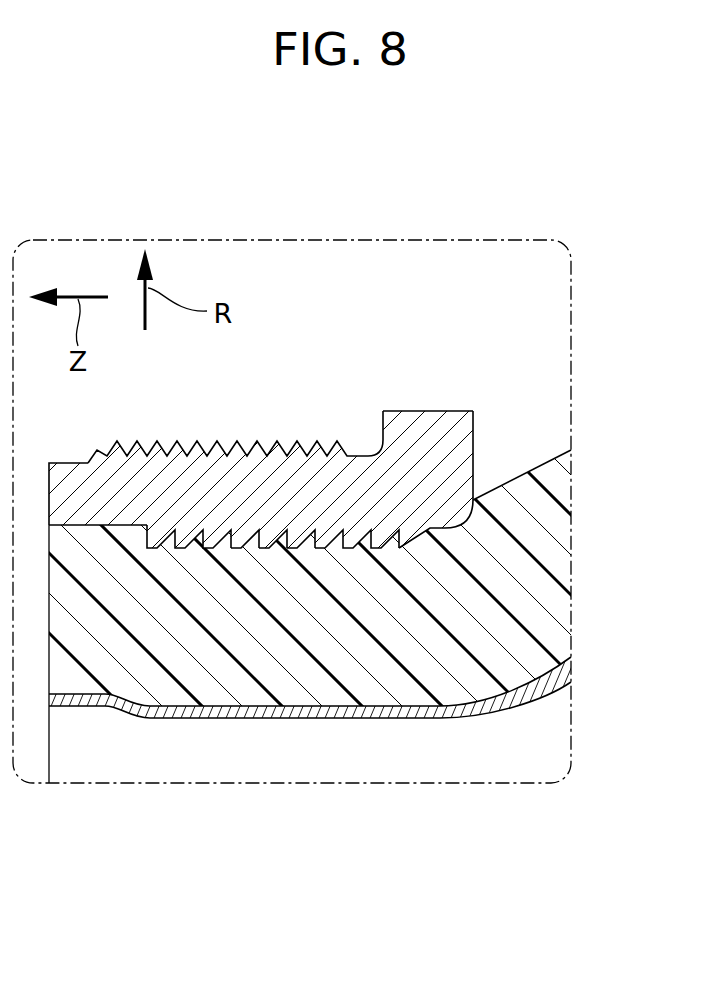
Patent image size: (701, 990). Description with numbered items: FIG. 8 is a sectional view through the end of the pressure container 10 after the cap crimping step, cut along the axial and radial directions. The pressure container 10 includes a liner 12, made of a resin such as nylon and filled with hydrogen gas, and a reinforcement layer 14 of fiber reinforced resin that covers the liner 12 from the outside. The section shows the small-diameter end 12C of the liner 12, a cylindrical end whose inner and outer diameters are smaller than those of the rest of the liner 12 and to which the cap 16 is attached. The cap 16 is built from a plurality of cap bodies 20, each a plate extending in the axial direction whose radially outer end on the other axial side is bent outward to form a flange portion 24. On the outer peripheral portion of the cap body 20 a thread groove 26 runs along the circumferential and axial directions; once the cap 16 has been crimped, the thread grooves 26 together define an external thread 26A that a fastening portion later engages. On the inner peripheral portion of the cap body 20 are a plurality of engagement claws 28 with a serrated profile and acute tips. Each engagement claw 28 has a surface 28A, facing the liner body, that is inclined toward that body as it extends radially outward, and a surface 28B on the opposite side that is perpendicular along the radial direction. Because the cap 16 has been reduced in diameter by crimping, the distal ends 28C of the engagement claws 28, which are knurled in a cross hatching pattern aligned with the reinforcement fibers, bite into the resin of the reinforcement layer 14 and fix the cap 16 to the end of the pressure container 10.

The pressure container 10 is at (490, 357).
The liner 12 is at (350, 646).
The small-diameter end 12C is at (190, 720).
The reinforcement layer 14 is at (542, 460).
The cap 16 is at (465, 421).
The cap body 20 is at (308, 427).
The flange portion 24 is at (447, 411).
The thread groove 26 is at (235, 411).
The external thread 26A is at (200, 450).
The engagement claw 28 is at (283, 727).
The surface of the engagement claw 28A is at (313, 545).
The surface of the engagement claw 28B is at (248, 543).
The distal end 28C is at (278, 545).